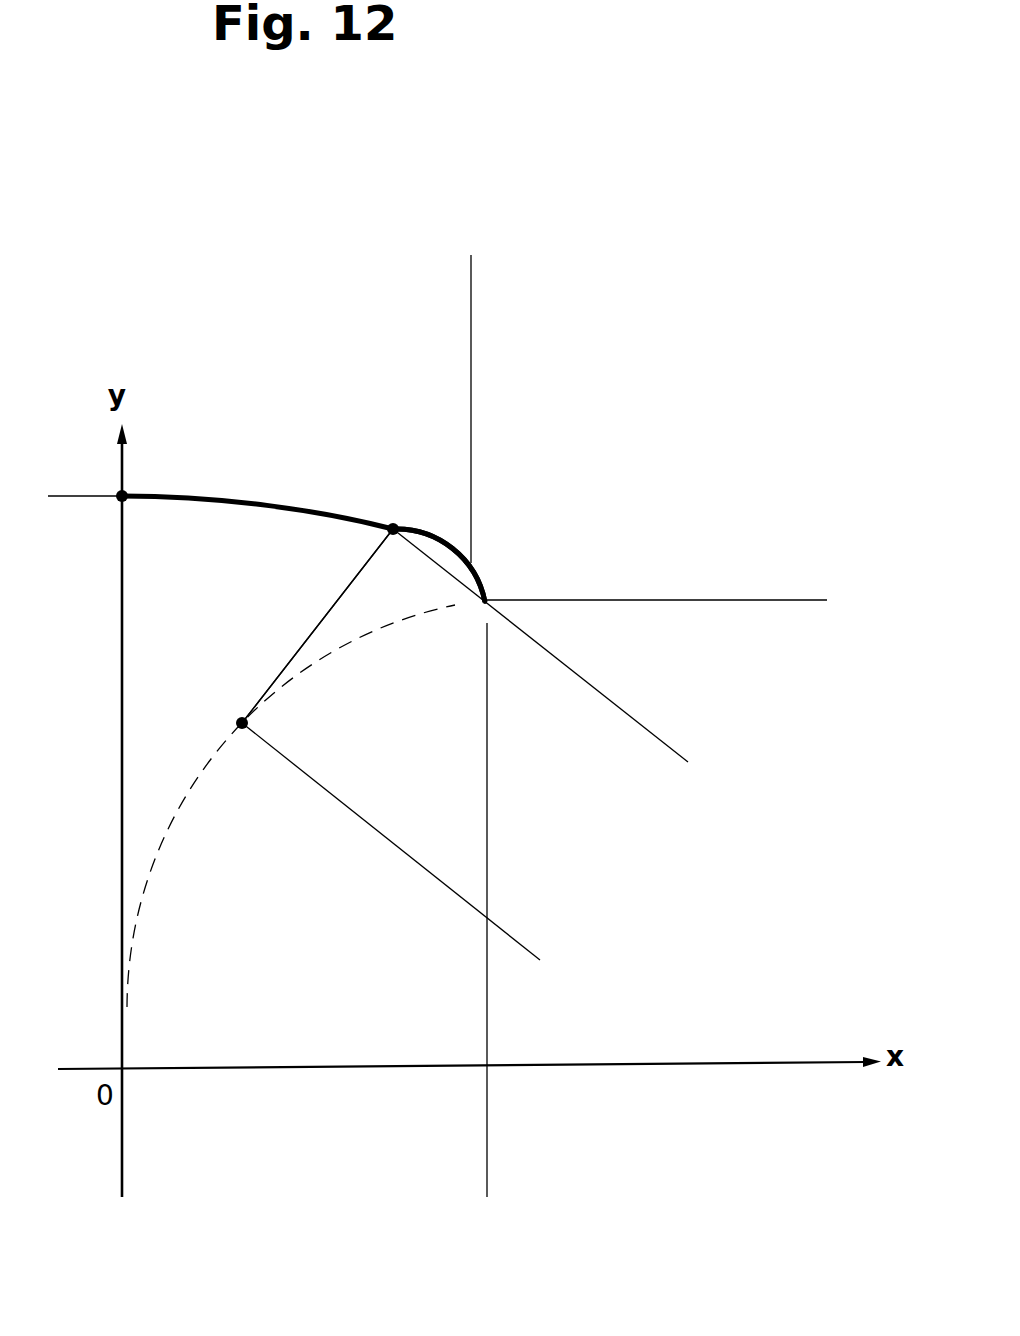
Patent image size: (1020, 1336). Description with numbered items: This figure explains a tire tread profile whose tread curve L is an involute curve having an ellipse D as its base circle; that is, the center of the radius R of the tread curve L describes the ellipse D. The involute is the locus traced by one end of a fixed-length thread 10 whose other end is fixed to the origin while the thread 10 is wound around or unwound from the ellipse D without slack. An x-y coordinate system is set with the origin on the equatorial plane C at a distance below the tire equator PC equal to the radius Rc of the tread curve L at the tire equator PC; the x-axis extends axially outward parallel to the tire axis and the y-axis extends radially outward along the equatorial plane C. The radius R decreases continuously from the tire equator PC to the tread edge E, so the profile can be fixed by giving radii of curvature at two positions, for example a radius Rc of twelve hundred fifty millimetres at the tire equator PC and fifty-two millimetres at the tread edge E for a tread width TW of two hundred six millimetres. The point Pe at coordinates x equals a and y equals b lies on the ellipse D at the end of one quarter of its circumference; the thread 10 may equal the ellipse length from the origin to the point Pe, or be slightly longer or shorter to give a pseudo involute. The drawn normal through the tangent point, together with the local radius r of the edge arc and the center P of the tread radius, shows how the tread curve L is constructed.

The thread 10 is at (318, 620).
The tire equator PC is at (123, 494).
The tangent point Tc is at (305, 506).
The tread curve L is at (358, 506).
The edge radius r is at (395, 530).
The tread edge E is at (472, 563).
The point Pe is at (488, 600).
The equatorial plane C is at (123, 537).
The center of arc P is at (237, 694).
The ellipse D is at (173, 830).
The radius of the tread curve R is at (683, 762).
The radius at the tire equator Rc is at (75, 1065).
The tread width TW is at (468, 268).
The x-coordinate of point Pe a is at (484, 1188).
The y-coordinate of point Pe b is at (815, 603).